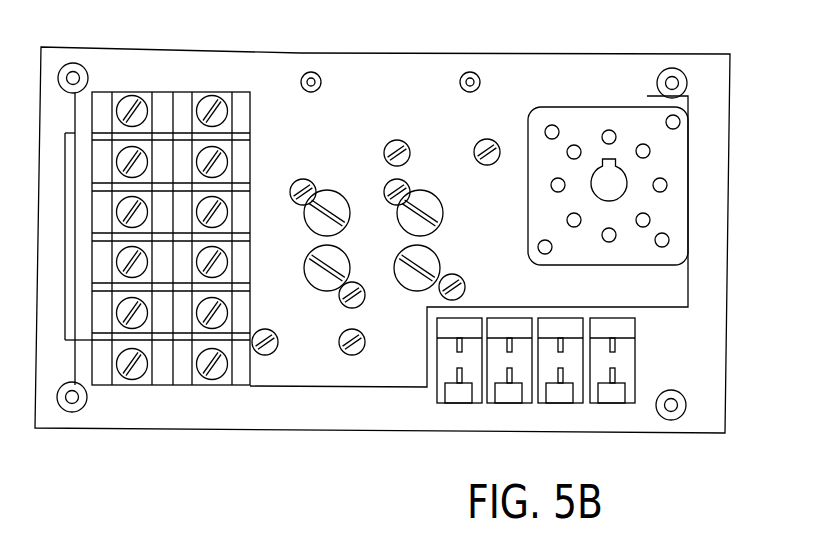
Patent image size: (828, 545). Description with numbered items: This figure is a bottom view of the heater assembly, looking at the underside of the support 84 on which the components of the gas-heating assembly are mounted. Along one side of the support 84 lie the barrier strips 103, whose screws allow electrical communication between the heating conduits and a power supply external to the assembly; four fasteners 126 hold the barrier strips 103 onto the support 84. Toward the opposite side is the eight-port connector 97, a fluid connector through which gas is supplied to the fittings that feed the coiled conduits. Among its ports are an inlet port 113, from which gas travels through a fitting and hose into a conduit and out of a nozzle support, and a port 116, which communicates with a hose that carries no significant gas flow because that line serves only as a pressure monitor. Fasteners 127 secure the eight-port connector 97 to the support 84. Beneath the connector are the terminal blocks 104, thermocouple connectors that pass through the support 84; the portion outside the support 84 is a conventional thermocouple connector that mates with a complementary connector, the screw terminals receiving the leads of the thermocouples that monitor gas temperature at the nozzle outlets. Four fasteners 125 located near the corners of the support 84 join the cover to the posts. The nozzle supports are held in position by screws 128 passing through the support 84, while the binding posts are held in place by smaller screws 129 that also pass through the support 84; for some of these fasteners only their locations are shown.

The support 84 is at (303, 416).
The eight-port connector 97 is at (649, 185).
The barrier strips 103 is at (157, 219).
The terminal blocks 104 is at (597, 400).
The port 113 is at (651, 148).
The port 116 is at (668, 185).
The fasteners 125 is at (82, 68).
The fasteners 126 is at (135, 98).
The fasteners 127 is at (683, 124).
The screws 128 is at (398, 217).
The screws 129 is at (410, 187).